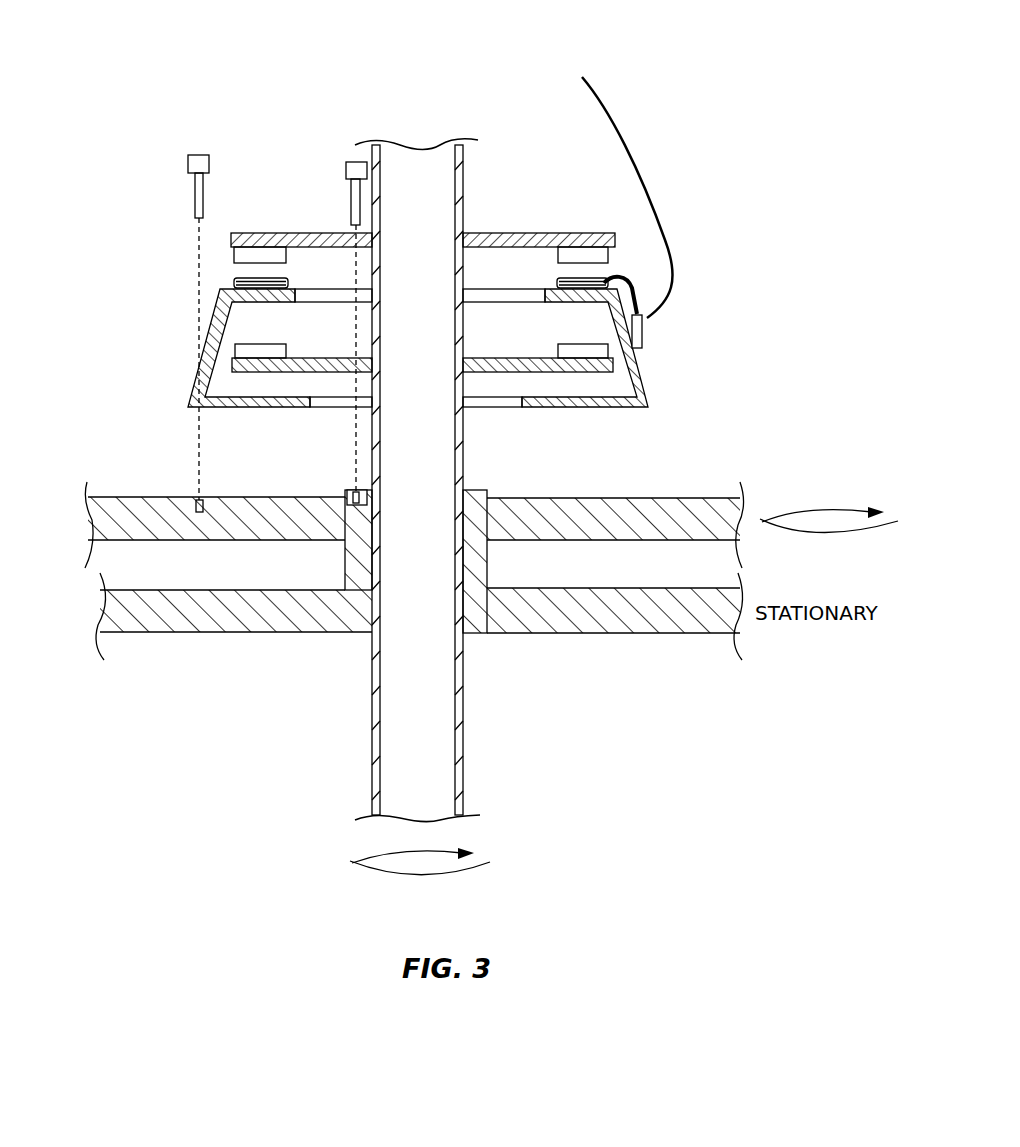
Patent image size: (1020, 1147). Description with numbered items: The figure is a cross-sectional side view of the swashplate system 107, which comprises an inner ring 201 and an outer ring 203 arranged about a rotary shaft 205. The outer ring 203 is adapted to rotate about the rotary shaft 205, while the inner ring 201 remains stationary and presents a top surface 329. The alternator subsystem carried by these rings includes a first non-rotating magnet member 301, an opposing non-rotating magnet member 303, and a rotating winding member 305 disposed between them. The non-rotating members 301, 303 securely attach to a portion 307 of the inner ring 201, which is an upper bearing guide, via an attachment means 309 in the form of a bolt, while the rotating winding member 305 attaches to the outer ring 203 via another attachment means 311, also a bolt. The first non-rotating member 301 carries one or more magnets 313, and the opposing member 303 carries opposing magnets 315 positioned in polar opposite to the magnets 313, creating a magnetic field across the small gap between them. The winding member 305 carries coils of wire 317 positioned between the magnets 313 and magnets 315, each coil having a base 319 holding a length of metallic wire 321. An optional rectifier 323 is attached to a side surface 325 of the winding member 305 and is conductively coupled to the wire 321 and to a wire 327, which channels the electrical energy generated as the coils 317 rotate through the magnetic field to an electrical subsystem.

The swashplate system 107 is at (106, 53).
The inner ring 201 is at (237, 632).
The outer ring 203 is at (210, 540).
The rotary shaft 205 is at (372, 716).
The first non-rotating magnet member 301 is at (563, 233).
The opposing non-rotating magnet member 303 is at (615, 363).
The rotating winding member 305 is at (598, 408).
The portion of inner ring 307 is at (342, 482).
The attachment means 309 is at (351, 182).
The attachment means 311 is at (195, 183).
The magnets 313 is at (234, 255).
The opposing magnets 315 is at (232, 349).
The coils of wire 317 is at (234, 285).
The base 319 is at (598, 284).
The metallic wire 321 is at (634, 290).
The rectifier 323 is at (643, 332).
The side surface 325 is at (656, 387).
The wire 327 is at (618, 130).
The top surface 329 is at (617, 582).